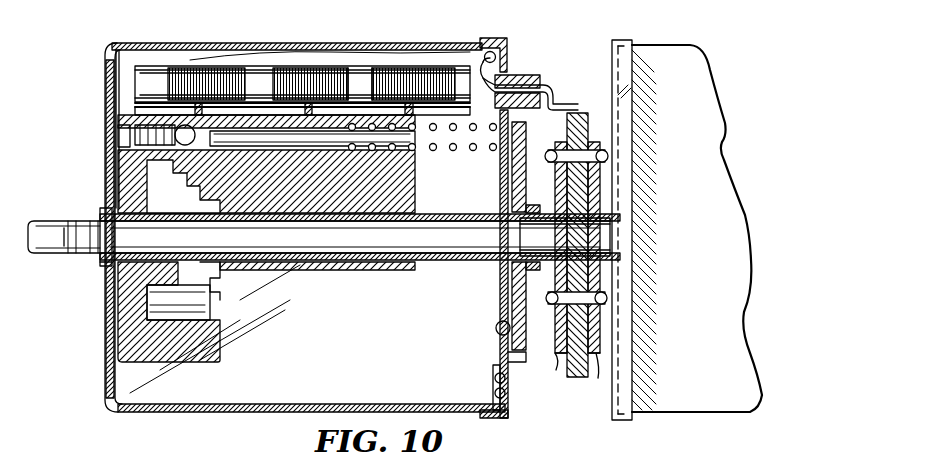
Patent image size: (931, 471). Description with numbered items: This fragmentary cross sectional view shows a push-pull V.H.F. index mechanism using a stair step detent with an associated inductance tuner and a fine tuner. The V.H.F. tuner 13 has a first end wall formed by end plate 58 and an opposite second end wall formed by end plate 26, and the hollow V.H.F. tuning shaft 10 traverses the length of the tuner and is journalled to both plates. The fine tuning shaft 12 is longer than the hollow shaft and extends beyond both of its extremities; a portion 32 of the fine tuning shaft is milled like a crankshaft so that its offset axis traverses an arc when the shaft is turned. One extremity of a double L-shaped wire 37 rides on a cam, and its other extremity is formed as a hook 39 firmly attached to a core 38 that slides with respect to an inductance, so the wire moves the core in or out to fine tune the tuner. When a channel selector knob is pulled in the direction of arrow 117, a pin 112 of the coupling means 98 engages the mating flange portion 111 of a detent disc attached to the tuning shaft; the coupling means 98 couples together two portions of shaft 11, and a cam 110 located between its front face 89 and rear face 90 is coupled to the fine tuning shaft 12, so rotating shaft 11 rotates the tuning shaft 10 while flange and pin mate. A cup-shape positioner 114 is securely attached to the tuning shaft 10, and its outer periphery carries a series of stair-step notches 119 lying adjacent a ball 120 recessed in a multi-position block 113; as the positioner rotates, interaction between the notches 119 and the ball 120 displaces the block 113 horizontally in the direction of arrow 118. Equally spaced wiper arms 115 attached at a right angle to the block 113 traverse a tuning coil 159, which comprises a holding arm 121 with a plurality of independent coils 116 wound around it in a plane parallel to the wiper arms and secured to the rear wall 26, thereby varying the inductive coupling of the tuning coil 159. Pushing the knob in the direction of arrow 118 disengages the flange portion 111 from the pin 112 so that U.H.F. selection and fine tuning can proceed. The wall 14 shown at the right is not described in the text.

The V.H.F. tuning shaft 10 is at (465, 262).
The shaft 11 is at (488, 262).
The fine tuning shaft 12 is at (451, 238).
The V.H.F. tuner 13 is at (181, 44).
The wall 14 is at (675, 72).
The end plate 26 is at (505, 50).
The portion of shaft 32 is at (565, 237).
The double L-shaped wire 37 is at (552, 104).
The core 38 is at (487, 53).
The hook 39 is at (498, 44).
The end plate 58 is at (106, 100).
The front face 89 is at (552, 370).
The rear face 90 is at (587, 375).
The coupling means 98 is at (599, 132).
The cam 110 is at (580, 116).
The flange portion 111 is at (531, 212).
The pin 112 is at (543, 212).
The multi-position block 113 is at (400, 168).
The cup-shape positioner 114 is at (180, 305).
The wiper arms 115 is at (412, 110).
The independent coils 116 is at (240, 72).
The arrow 117 is at (48, 189).
The arrow 118 is at (84, 279).
The stair-step notches 119 is at (208, 280).
The ball 120 is at (184, 132).
The holding arm 121 is at (137, 80).
The tuning coil 159 is at (350, 70).